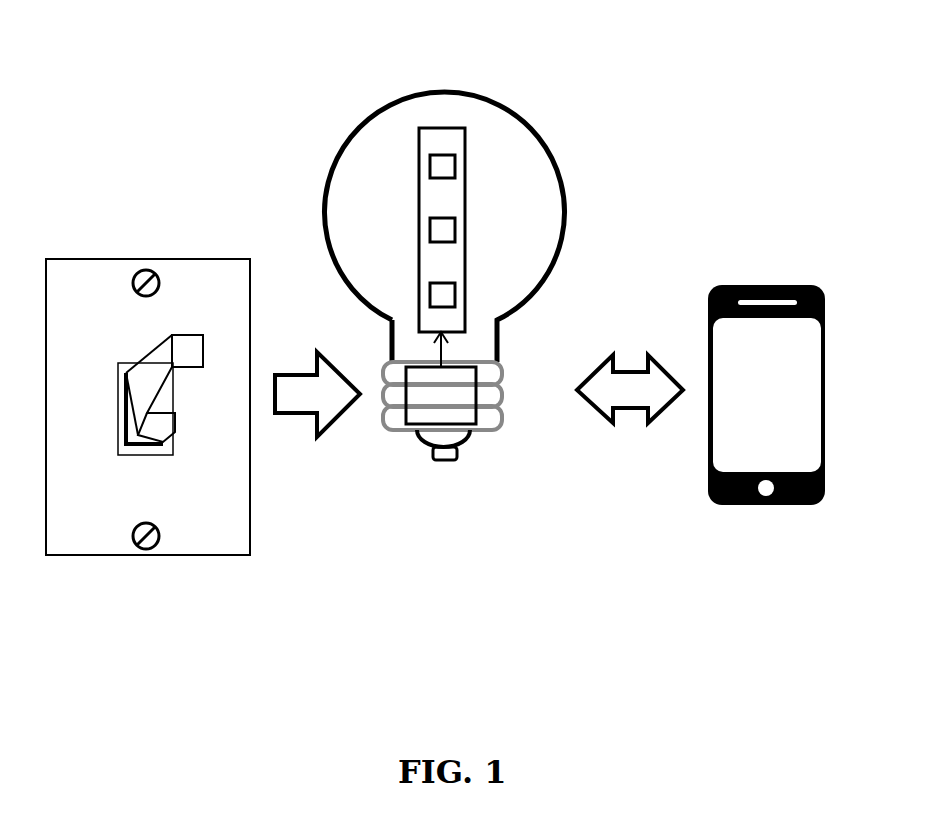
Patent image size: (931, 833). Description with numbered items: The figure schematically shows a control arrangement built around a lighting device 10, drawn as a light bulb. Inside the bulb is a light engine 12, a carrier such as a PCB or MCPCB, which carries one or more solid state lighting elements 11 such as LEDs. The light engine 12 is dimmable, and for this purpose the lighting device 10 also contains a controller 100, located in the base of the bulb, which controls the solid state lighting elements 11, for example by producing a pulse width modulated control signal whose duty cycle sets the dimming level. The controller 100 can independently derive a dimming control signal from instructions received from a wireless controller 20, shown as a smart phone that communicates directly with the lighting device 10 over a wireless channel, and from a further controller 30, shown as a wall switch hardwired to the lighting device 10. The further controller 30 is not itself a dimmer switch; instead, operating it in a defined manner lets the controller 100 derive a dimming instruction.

The lighting device 10 is at (443, 460).
The solid state lighting element 11 is at (437, 168).
The light engine 12 is at (447, 128).
The controller 100 is at (463, 393).
The wireless controller 20 is at (768, 505).
The further controller 30 is at (142, 556).